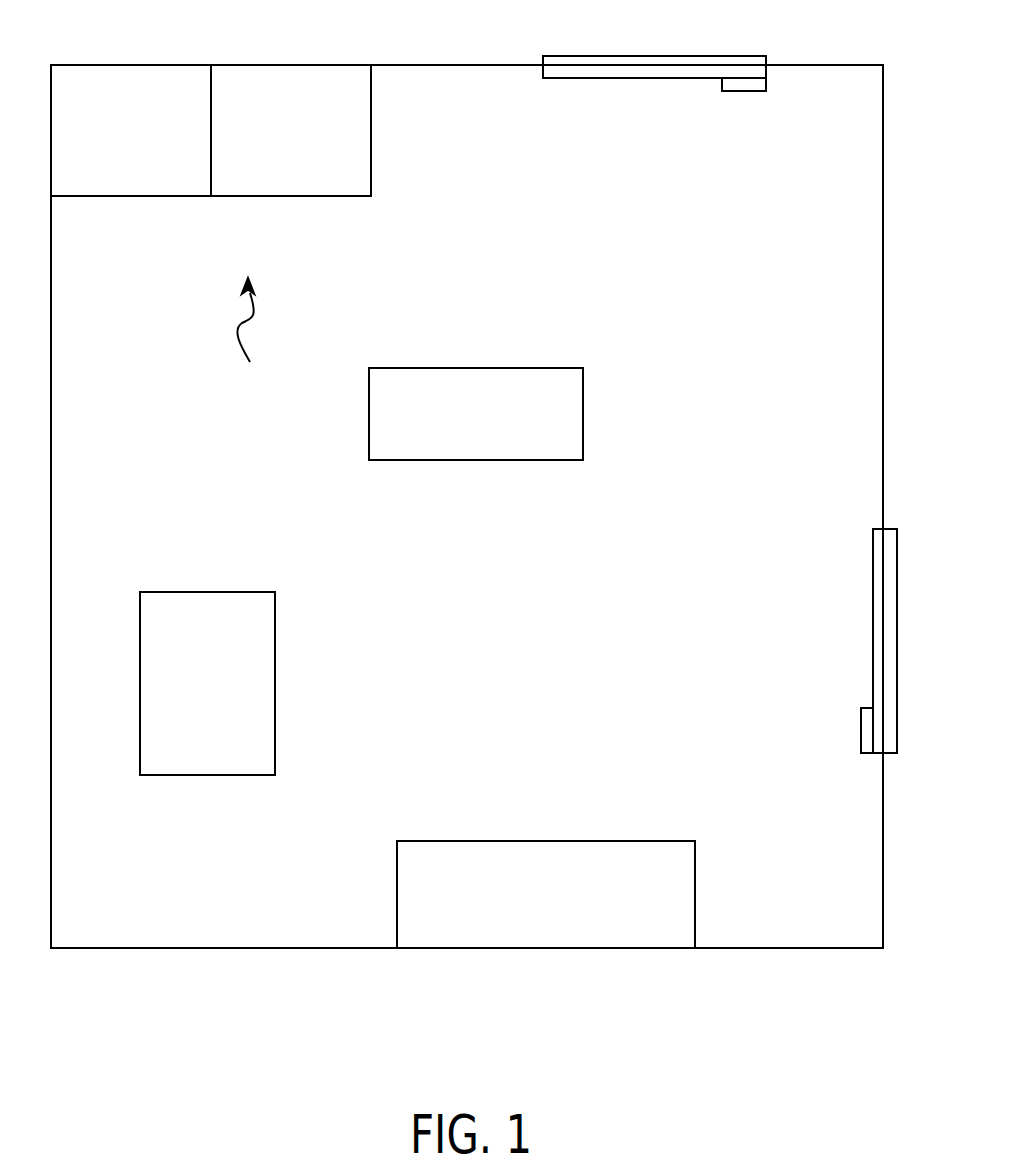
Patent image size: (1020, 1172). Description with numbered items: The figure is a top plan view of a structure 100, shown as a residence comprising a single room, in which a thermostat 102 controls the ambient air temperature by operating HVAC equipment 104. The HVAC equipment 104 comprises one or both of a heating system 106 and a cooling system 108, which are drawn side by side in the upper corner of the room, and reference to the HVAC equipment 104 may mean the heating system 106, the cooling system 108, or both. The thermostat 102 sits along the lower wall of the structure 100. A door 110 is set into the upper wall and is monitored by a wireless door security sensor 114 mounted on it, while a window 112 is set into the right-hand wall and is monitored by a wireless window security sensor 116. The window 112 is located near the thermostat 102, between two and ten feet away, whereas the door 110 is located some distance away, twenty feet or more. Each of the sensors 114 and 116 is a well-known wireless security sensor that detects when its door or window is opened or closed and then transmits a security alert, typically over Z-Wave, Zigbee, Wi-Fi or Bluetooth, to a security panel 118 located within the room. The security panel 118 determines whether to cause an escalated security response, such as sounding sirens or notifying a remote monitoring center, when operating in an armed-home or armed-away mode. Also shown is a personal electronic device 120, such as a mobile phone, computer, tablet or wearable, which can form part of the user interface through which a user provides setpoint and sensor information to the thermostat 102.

The structure 100 is at (799, 65).
The thermostat 102 is at (619, 841).
The HVAC equipment 104 is at (251, 337).
The heating system 106 is at (138, 196).
The cooling system 108 is at (298, 196).
The door 110 is at (569, 56).
The window 112 is at (873, 587).
The wireless door security sensor 114 is at (751, 91).
The wireless window security sensor 116 is at (861, 733).
The security panel 118 is at (505, 368).
The personal electronic device 120 is at (201, 592).